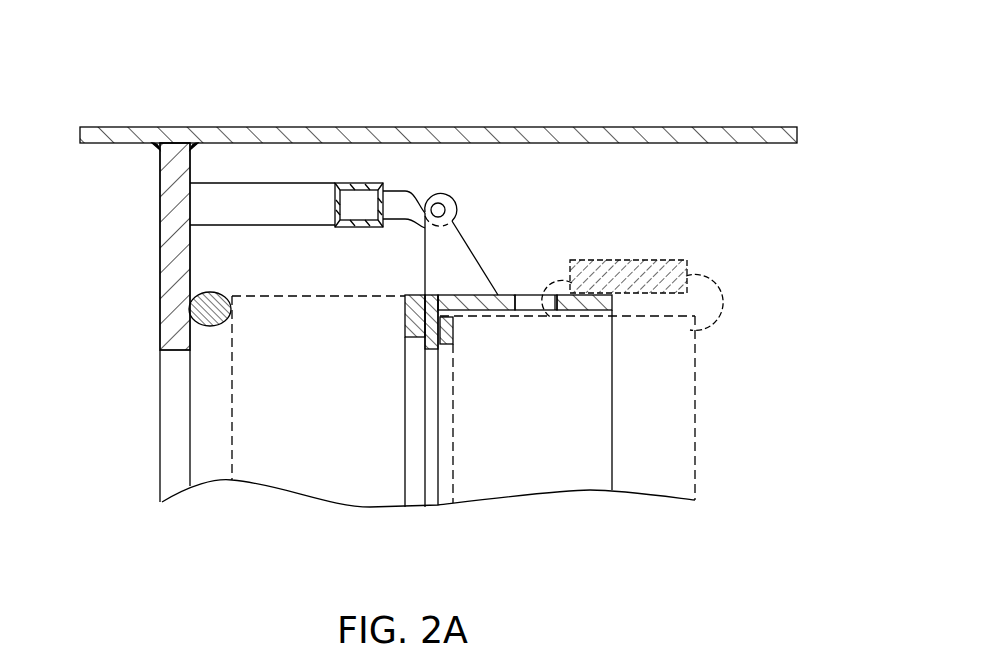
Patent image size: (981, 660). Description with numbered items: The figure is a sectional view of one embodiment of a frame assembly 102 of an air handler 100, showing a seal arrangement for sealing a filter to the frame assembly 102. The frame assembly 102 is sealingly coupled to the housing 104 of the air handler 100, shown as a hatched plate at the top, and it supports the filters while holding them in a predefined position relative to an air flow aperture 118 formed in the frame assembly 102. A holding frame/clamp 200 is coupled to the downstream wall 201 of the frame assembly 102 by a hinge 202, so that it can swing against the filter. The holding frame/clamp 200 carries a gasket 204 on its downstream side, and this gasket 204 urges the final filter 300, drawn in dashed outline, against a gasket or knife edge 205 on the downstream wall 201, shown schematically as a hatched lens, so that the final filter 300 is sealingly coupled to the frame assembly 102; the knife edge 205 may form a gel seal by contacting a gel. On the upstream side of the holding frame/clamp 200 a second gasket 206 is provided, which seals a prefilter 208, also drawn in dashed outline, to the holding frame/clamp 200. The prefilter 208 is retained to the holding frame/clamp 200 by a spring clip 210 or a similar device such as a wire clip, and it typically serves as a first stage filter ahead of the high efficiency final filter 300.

The air handler 100 is at (563, 68).
The housing 104 is at (628, 127).
The downstream wall 201 is at (161, 188).
The frame assembly 102 is at (160, 272).
The air flow aperture 118 is at (177, 402).
The hinge 202 is at (460, 203).
The holding frame/clamp 200 is at (502, 300).
The gasket 204 is at (410, 318).
The gasket 206 is at (452, 333).
The knife edge 205 is at (228, 311).
The final filter 300 is at (252, 296).
The prefilter 208 is at (695, 383).
The spring clip 210 is at (625, 260).